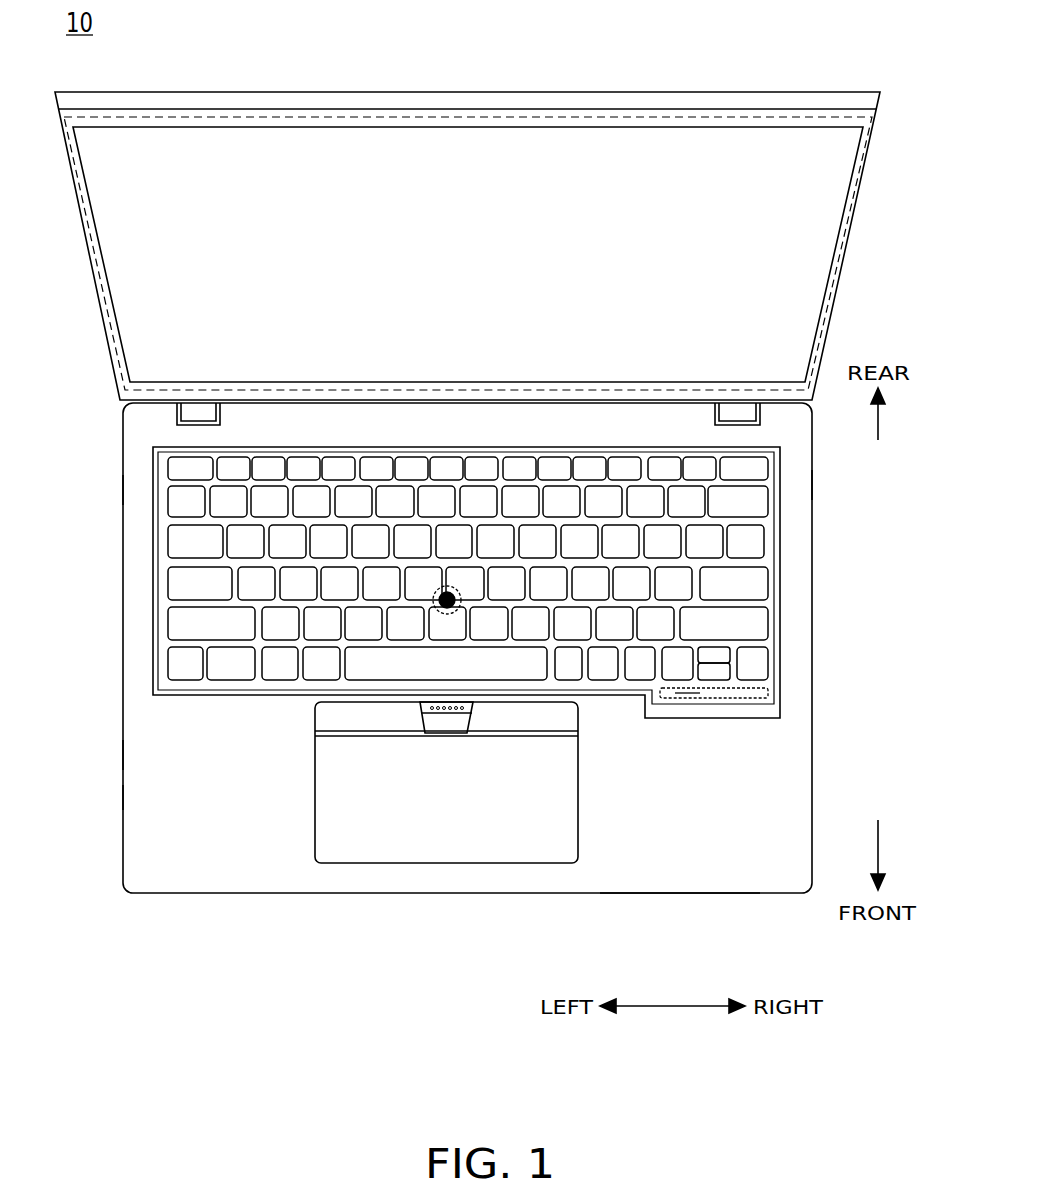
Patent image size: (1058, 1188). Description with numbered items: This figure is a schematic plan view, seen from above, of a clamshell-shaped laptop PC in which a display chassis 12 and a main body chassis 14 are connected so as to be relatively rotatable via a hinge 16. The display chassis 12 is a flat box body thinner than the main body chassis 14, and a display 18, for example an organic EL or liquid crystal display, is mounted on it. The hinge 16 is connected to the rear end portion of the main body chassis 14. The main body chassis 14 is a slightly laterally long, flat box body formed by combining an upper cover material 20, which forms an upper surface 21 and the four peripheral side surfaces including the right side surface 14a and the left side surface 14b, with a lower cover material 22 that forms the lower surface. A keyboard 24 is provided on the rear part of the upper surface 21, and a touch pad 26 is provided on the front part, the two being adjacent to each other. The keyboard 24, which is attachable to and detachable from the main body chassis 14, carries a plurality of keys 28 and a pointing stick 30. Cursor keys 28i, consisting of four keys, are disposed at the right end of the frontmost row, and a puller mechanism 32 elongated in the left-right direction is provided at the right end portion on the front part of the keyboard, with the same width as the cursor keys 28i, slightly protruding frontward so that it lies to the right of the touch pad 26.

The display chassis 12 is at (843, 272).
The main body chassis 14 is at (846, 578).
The right side surface of chassis 14a is at (812, 485).
The left side surface of chassis 14b is at (121, 490).
The hinge 16 is at (200, 412).
The display 18 is at (730, 168).
The upper cover material 20 is at (165, 750).
The upper surface 21 is at (673, 872).
The lower cover material 22 is at (165, 797).
The keyboard 24 is at (567, 428).
The touch pad 26 is at (523, 838).
The keys 28 is at (456, 545).
The cursor keys 28i is at (784, 665).
The pointing stick 30 is at (445, 602).
The puller mechanism 32 is at (731, 714).